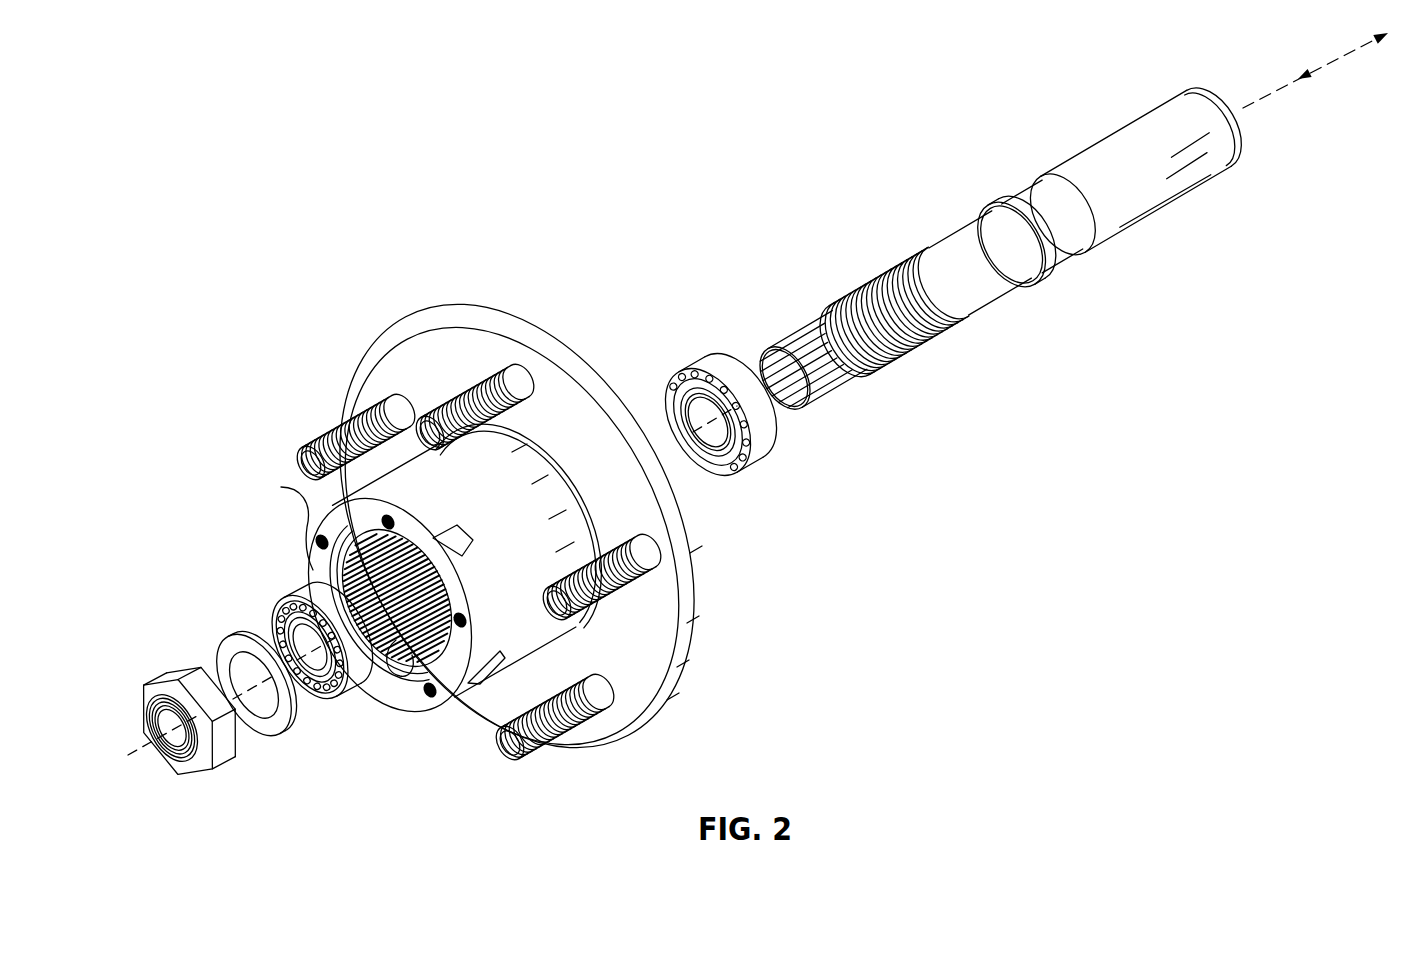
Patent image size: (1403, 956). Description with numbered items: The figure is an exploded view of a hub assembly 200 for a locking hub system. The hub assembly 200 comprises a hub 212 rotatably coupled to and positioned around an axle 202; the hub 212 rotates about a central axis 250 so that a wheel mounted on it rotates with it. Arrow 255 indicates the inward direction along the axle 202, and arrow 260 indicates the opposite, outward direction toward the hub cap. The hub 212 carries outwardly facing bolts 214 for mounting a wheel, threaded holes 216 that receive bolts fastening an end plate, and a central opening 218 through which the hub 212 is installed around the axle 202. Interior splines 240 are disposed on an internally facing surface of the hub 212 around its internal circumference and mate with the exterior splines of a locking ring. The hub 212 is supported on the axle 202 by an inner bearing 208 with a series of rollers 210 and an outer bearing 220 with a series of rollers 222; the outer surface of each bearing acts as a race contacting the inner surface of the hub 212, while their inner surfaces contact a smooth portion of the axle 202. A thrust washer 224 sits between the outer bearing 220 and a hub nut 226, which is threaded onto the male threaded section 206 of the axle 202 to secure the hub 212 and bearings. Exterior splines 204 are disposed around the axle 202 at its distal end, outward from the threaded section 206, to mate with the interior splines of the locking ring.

The hub assembly 200 is at (208, 212).
The axle 202 is at (957, 242).
The exterior splines 204 is at (812, 312).
The male threaded section 206 is at (920, 372).
The inner bearing 208 is at (755, 462).
The rollers 210 is at (684, 358).
The hub 212 is at (443, 318).
The outwardly facing bolts 214 is at (334, 428).
The threaded holes 216 is at (370, 527).
The central opening 218 is at (357, 580).
The outer bearing 220 is at (325, 700).
The rollers 222 is at (297, 600).
The thrust washer 224 is at (237, 640).
The hub nut 226 is at (212, 775).
The interior splines 240 is at (410, 665).
The central axis 250 is at (1246, 111).
The arrow indicating inward direction 255 is at (1366, 44).
The arrow indicating outward direction 260 is at (1310, 73).